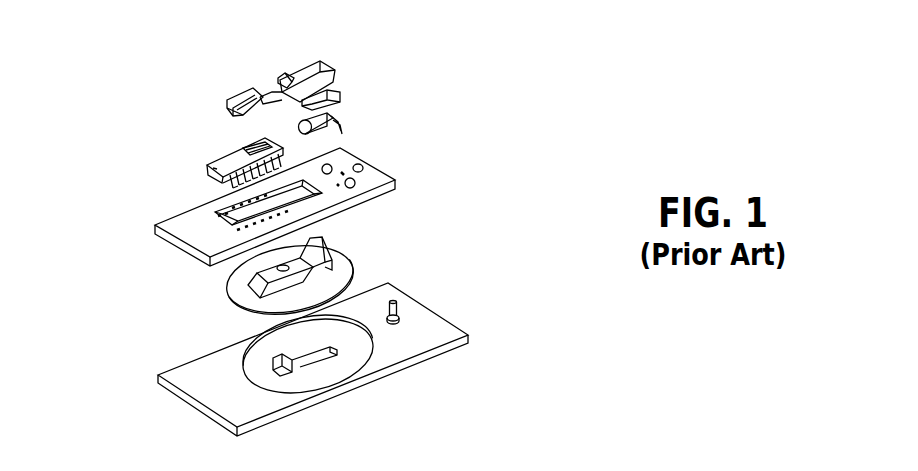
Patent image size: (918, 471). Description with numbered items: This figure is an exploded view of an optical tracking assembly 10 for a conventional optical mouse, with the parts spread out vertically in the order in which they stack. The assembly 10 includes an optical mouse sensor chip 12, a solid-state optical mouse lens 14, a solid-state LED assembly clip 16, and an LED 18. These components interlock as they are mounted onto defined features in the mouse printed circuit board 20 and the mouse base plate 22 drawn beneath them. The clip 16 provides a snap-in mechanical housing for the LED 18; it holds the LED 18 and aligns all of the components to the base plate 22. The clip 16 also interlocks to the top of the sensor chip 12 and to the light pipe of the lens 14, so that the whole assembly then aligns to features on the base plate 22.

The optical tracking assembly 10 is at (208, 62).
The optical mouse sensor chip 12 is at (283, 145).
The solid-state optical mouse lens 14 is at (345, 263).
The LED assembly clip 16 is at (330, 68).
The LED 18 is at (341, 121).
The mouse printed circuit board 20 is at (353, 203).
The mouse base plate 22 is at (433, 327).